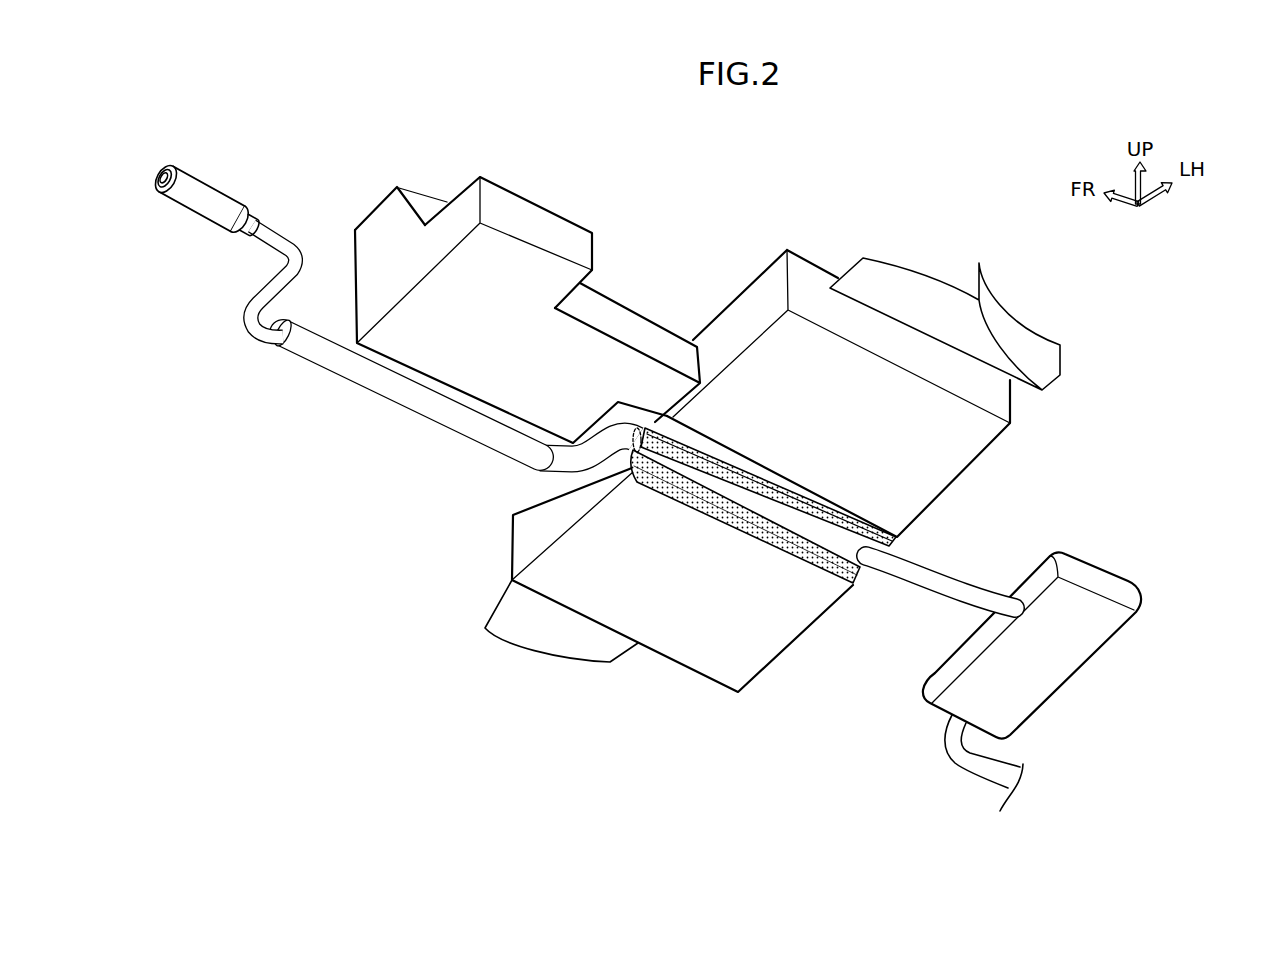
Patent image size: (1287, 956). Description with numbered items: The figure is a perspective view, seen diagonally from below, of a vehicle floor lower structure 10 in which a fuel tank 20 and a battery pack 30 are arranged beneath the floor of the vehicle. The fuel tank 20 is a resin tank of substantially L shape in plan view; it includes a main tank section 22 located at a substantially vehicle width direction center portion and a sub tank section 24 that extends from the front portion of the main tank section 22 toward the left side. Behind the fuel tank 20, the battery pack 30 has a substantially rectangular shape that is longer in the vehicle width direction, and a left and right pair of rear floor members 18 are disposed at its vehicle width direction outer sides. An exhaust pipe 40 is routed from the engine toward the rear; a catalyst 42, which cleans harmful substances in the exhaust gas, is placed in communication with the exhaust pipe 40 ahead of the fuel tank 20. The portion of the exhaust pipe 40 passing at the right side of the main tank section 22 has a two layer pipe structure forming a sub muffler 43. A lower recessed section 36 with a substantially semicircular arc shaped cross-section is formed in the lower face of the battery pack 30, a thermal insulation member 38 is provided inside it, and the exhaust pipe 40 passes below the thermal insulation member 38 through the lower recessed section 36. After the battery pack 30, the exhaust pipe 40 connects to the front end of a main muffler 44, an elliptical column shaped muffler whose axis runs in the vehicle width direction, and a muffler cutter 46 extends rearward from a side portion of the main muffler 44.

The vehicle floor lower structure 10 is at (763, 474).
The rear floor members 18 is at (553, 640).
The fuel tank 20 is at (507, 266).
The main tank section 22 is at (380, 212).
The sub tank section 24 is at (528, 216).
The battery pack 30 is at (788, 248).
The lower recessed section 36 is at (640, 480).
The thermal insulation member 38 is at (772, 537).
The exhaust pipe 40 is at (257, 247).
The catalyst 42 is at (214, 192).
The sub muffler 43 is at (353, 389).
The main muffler 44 is at (1103, 580).
The muffler cutter 46 is at (960, 772).